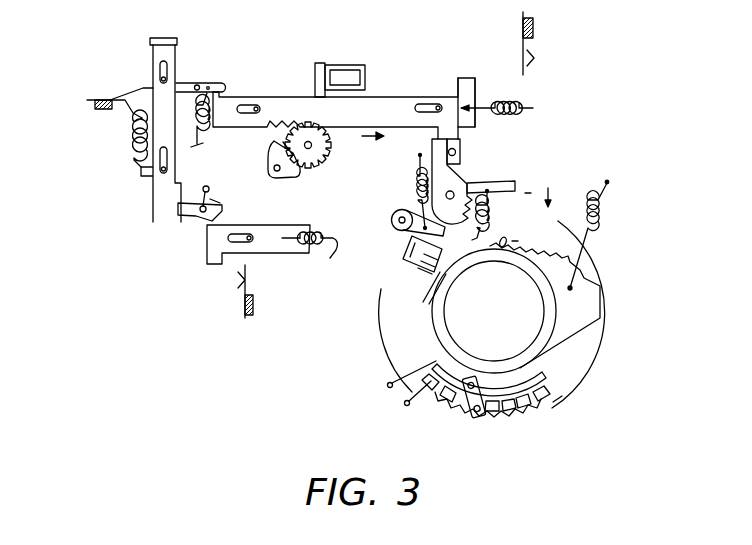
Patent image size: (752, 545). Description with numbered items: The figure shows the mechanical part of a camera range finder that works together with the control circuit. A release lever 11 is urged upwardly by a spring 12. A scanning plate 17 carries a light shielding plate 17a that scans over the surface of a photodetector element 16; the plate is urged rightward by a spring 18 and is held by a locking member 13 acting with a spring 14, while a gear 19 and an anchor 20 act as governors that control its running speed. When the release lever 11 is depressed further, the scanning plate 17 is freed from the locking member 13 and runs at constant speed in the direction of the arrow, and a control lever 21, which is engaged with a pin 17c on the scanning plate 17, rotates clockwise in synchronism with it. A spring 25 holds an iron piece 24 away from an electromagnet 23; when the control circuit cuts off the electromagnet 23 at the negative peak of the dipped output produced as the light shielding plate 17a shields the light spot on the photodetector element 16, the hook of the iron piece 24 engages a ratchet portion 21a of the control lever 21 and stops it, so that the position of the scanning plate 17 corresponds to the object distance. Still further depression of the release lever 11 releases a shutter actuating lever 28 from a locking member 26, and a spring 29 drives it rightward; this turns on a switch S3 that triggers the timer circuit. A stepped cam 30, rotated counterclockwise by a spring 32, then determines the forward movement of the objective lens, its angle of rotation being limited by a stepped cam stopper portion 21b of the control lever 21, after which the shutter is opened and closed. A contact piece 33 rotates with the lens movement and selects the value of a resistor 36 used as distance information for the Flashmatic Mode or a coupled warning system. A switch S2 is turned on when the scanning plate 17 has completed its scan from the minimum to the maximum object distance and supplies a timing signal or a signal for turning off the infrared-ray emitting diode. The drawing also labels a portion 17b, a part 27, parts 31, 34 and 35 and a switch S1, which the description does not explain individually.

The release lever 11 is at (176, 58).
The spring 12 is at (141, 170).
The locking member 13 is at (206, 83).
The spring 14 is at (205, 141).
The photodetector element 16 is at (340, 64).
The scanning plate 17 is at (378, 96).
The light shielding plate 17a is at (318, 63).
The end portion of rack bar 17b is at (468, 78).
The pin 17c is at (462, 153).
The spring 18 is at (532, 108).
The gear 19 is at (331, 147).
The anchor 20 is at (297, 180).
The control lever 21 is at (462, 177).
The ratchet portion 21a is at (474, 236).
The stepped cam stopper portion 21b is at (518, 181).
The electromagnet 23 is at (405, 263).
The iron piece 24 is at (391, 221).
The spring 25 is at (415, 161).
The locking member 26 is at (185, 221).
The pin 27 is at (209, 189).
The shutter actuating lever 28 is at (260, 224).
The spring 29 is at (330, 258).
The stepped cam 30 is at (603, 289).
The ring 31 is at (586, 375).
The spring 32 is at (608, 183).
The contact piece 33 is at (460, 418).
The contact arc 34 is at (540, 366).
The contact segments 35 is at (538, 416).
The resistor 36 is at (553, 402).
The switch S1 is at (118, 96).
The switch S2 is at (540, 43).
The switch S3 is at (258, 291).